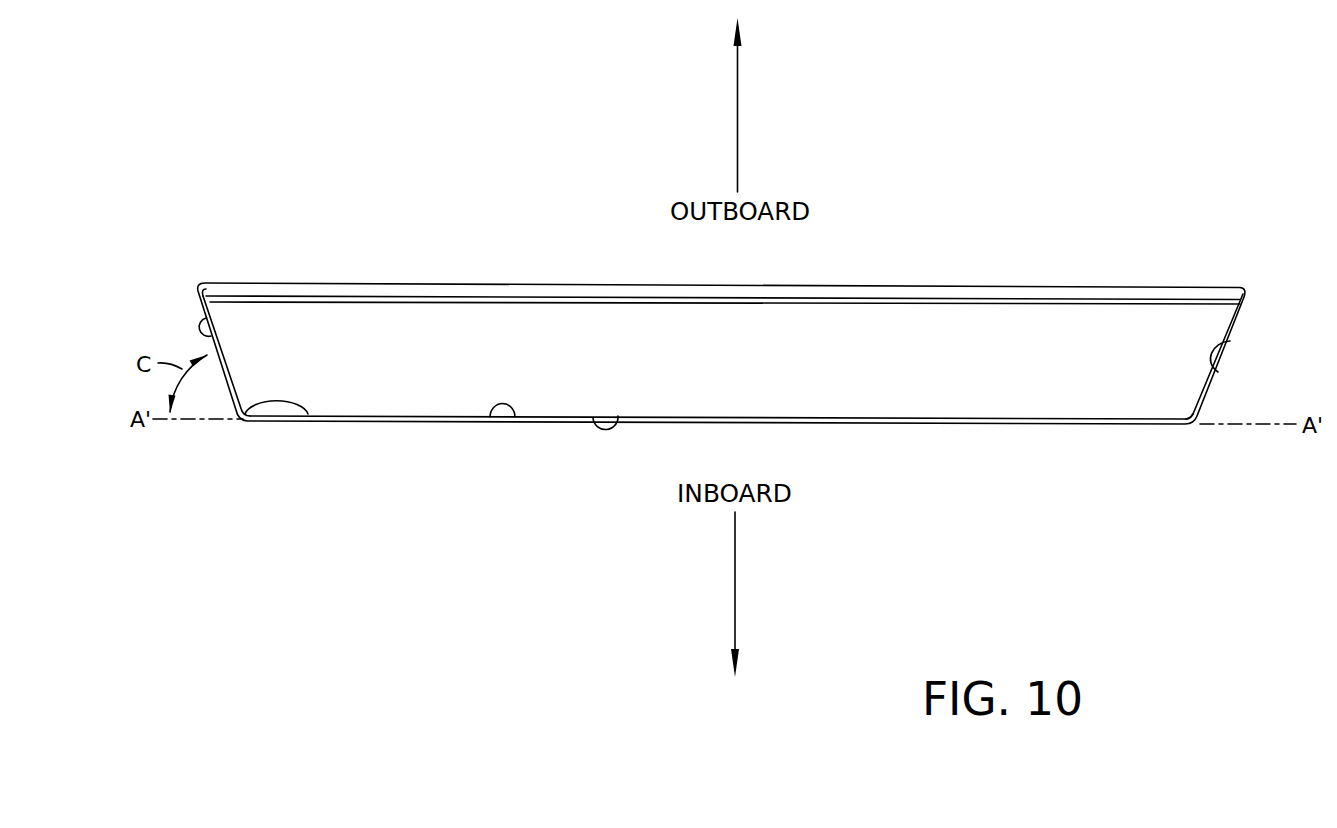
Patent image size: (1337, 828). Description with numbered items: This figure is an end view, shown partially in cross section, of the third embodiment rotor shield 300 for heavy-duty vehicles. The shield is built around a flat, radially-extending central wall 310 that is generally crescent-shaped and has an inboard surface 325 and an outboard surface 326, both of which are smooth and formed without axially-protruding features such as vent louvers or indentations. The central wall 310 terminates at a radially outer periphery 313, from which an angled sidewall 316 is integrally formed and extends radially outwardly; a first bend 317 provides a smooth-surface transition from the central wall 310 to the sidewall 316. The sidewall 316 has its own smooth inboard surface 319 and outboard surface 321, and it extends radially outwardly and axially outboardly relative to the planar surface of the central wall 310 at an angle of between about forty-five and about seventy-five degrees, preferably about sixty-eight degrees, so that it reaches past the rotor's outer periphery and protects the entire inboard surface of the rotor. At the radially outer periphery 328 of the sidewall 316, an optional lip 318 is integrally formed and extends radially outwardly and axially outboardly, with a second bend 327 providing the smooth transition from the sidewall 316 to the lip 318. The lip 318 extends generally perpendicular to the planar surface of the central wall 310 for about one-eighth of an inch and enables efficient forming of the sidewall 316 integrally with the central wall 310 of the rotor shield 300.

The rotor shield 300 is at (247, 212).
The central wall 310 is at (862, 423).
The radially outer periphery 313 is at (1190, 424).
The angled sidewall 316 is at (214, 362).
The first bend 317 is at (308, 414).
The lip 318 is at (200, 293).
The inboard surface 319 is at (200, 334).
The outboard surface 321 is at (1222, 341).
The inboard surface 325 is at (618, 416).
The outboard surface 326 is at (515, 417).
The second bend 327 is at (200, 290).
The radially outer periphery 328 is at (1238, 313).